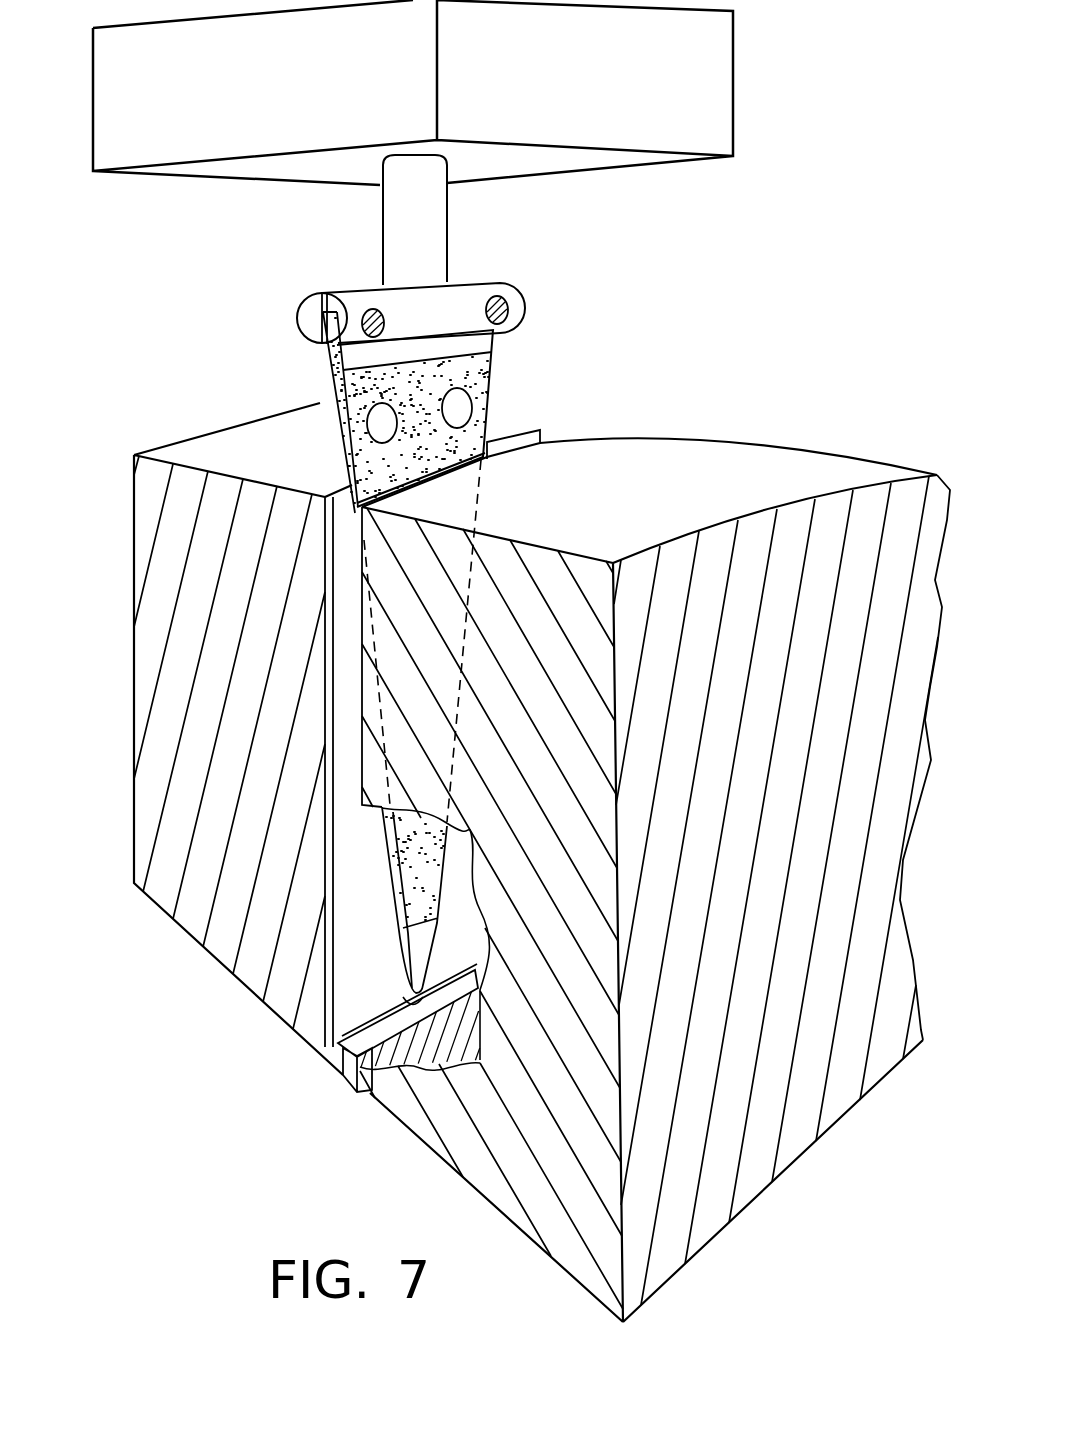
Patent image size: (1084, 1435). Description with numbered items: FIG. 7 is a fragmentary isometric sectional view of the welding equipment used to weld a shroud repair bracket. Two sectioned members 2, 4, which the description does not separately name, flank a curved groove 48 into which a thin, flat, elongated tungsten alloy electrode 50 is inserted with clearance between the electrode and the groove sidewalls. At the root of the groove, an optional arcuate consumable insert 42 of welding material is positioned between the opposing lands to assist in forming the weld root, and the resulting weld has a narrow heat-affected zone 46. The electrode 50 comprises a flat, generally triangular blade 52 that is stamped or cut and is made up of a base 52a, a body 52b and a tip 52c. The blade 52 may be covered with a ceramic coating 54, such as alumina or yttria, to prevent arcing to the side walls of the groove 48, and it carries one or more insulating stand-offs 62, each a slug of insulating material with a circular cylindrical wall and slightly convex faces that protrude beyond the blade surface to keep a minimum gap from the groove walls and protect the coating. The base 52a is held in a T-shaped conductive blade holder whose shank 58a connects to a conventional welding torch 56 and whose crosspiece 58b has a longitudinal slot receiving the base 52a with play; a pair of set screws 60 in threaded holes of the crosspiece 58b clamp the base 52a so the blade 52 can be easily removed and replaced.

The first block 2 is at (157, 742).
The second block 4 is at (837, 470).
The arcuate consumable insert 42 is at (347, 1090).
The heat-affected zone 46 is at (325, 688).
The curved groove 48 is at (325, 560).
The tungsten alloy electrode 50 is at (207, 326).
The blade 52 is at (337, 420).
The base 52a is at (327, 362).
The body 52b is at (460, 503).
The tip 52c is at (397, 1000).
The ceramic coating 54 is at (412, 870).
The welding torch 56 is at (735, 57).
The shank 58a is at (383, 213).
The crosspiece 58b is at (507, 283).
The set screws 60 is at (515, 316).
The insulating stand-offs 62 is at (463, 412).